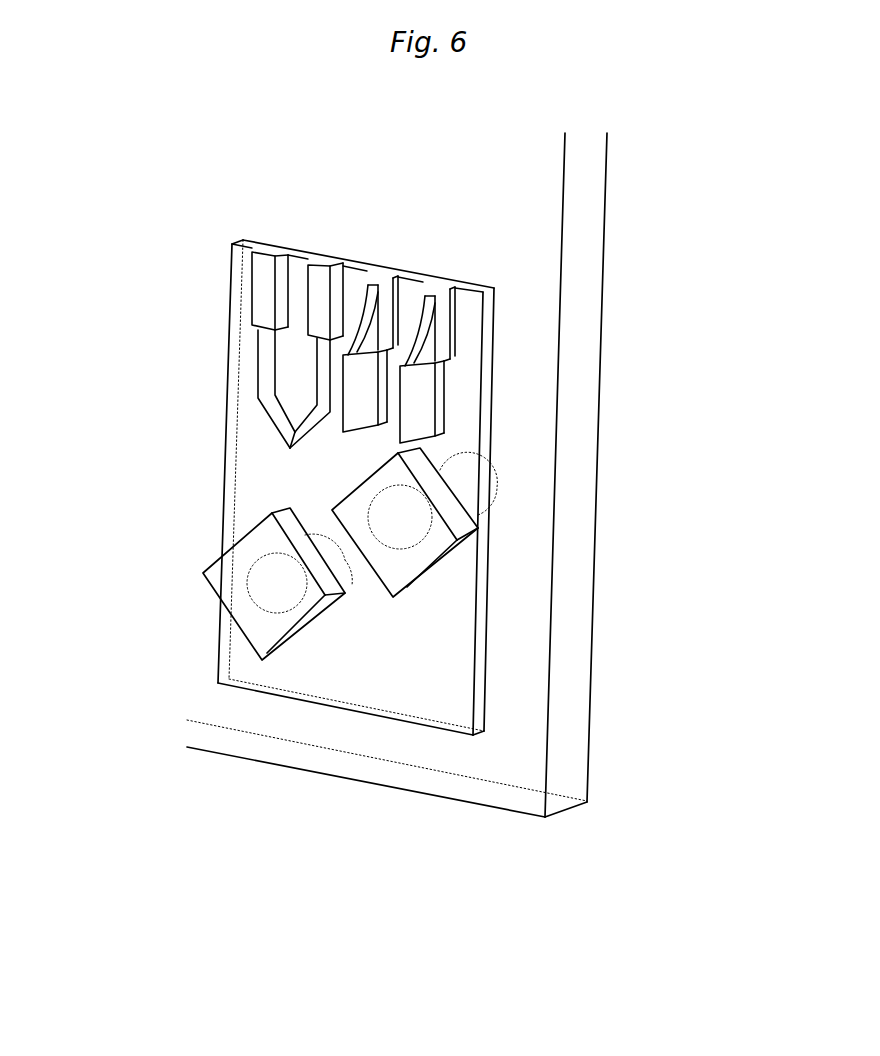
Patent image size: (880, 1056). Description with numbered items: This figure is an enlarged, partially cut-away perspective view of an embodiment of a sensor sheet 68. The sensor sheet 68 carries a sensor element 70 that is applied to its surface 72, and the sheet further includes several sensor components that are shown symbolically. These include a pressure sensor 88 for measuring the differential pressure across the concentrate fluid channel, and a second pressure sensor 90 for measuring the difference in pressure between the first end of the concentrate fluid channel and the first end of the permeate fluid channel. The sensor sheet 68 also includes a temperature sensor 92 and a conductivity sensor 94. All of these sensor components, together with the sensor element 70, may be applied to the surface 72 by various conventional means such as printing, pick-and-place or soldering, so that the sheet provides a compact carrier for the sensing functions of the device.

The sensor sheet 68 is at (275, 832).
The sensor element 70 is at (222, 445).
The surface 72 is at (523, 763).
The pressure sensor 88 is at (440, 542).
The pressure sensor 90 is at (250, 590).
The temperature sensor 92 is at (297, 263).
The conductivity sensor 94 is at (403, 277).